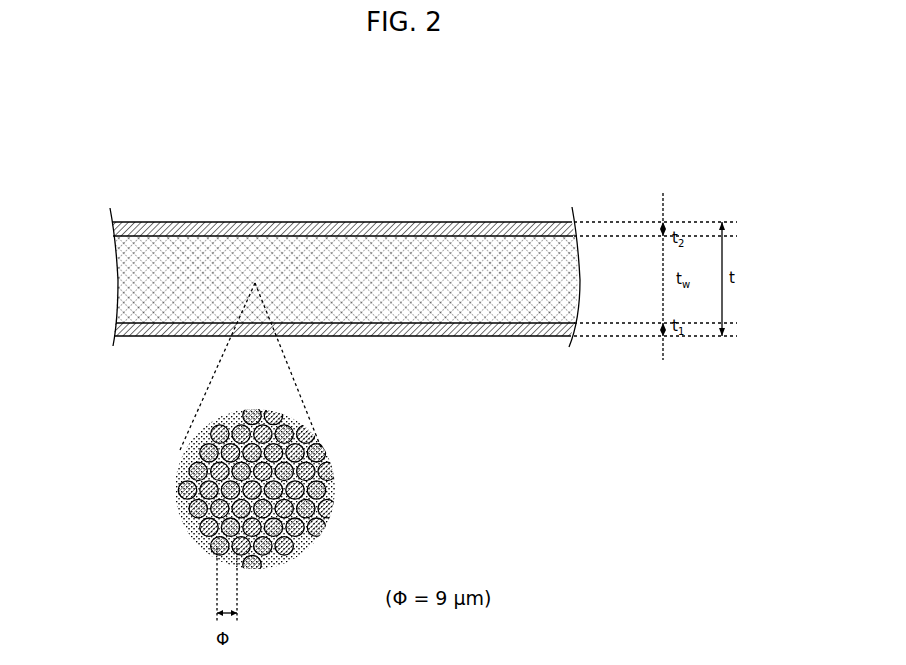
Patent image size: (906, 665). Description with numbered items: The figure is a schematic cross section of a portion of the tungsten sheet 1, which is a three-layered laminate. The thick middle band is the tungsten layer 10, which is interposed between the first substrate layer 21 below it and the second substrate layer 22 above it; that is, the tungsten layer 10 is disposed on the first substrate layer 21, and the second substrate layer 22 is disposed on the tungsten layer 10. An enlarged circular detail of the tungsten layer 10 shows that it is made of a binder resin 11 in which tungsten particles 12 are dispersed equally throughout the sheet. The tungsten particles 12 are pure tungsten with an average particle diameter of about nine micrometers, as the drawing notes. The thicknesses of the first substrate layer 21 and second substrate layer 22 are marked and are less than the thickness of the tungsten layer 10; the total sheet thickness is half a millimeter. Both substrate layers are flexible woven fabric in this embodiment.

The tungsten sheet 1 is at (195, 145).
The tungsten layer 10 is at (335, 395).
The binder resin 11 is at (215, 549).
The tungsten particles 12 is at (218, 556).
The first substrate layer 21 is at (363, 323).
The second substrate layer 22 is at (446, 223).